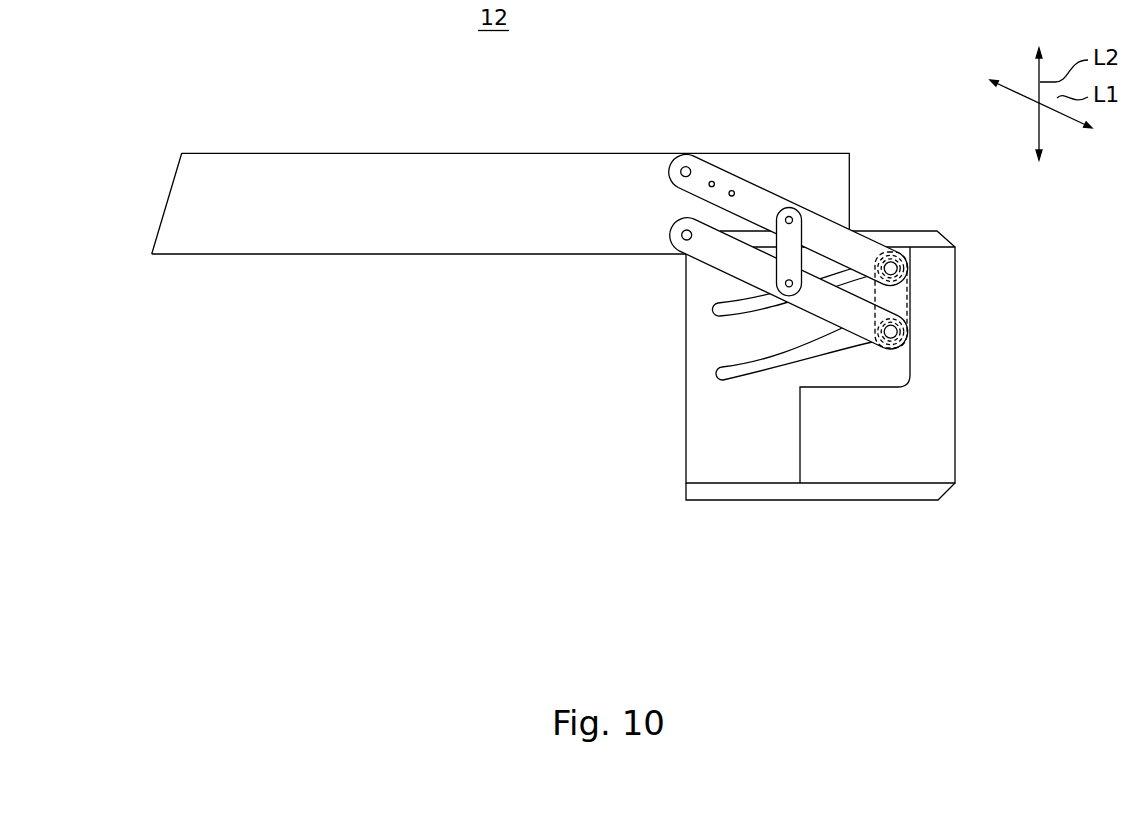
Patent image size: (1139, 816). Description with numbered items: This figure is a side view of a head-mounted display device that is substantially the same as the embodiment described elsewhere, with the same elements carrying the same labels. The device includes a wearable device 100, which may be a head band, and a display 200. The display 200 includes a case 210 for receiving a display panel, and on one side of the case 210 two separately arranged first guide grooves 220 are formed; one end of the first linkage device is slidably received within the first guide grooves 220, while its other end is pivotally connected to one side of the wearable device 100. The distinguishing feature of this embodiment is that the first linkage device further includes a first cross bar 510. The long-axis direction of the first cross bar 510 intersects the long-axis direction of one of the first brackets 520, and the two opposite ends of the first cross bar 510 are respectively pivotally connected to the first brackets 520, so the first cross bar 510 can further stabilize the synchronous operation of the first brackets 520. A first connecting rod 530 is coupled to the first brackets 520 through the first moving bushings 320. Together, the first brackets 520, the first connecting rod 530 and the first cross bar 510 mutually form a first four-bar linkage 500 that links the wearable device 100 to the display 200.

The wearable device 100 is at (178, 202).
The display 200 is at (582, 417).
The case 210 is at (712, 499).
The first guide grooves 220 is at (710, 315).
The first moving bushings 320 is at (903, 328).
The first four-bar linkage 500 is at (925, 92).
The first cross bar 510 is at (791, 237).
The first brackets 520 is at (750, 260).
The first connecting rod 530 is at (903, 300).